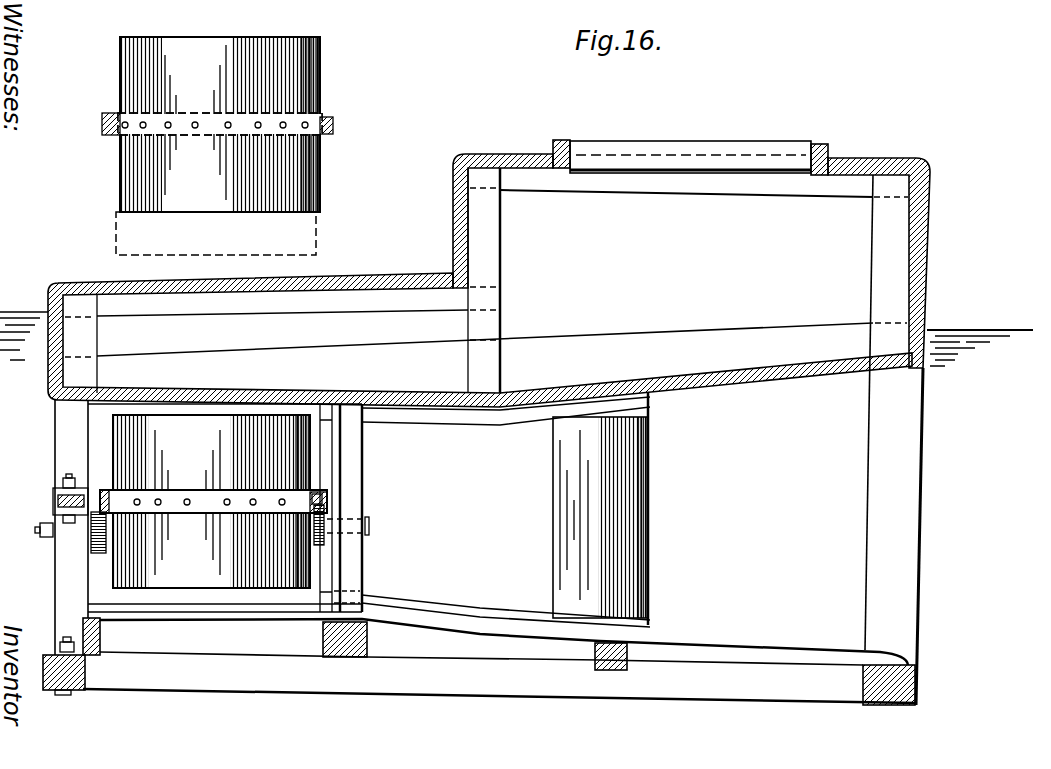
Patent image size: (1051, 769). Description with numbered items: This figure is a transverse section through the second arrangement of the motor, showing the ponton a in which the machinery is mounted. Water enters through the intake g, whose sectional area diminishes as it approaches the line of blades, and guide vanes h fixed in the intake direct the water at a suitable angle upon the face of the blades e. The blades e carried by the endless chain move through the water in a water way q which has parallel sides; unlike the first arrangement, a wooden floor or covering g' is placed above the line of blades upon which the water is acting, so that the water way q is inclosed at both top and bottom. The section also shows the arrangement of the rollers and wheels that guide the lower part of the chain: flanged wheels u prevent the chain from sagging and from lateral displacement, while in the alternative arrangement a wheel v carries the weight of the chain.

The ponton framework a is at (479, 157).
The blade e is at (320, 100).
The wooden floor or covering g' is at (480, 340).
The intake g is at (830, 440).
The guide vanes h is at (573, 508).
The flanged wheel u is at (350, 524).
The wheel v is at (97, 556).
The water way q is at (100, 421).